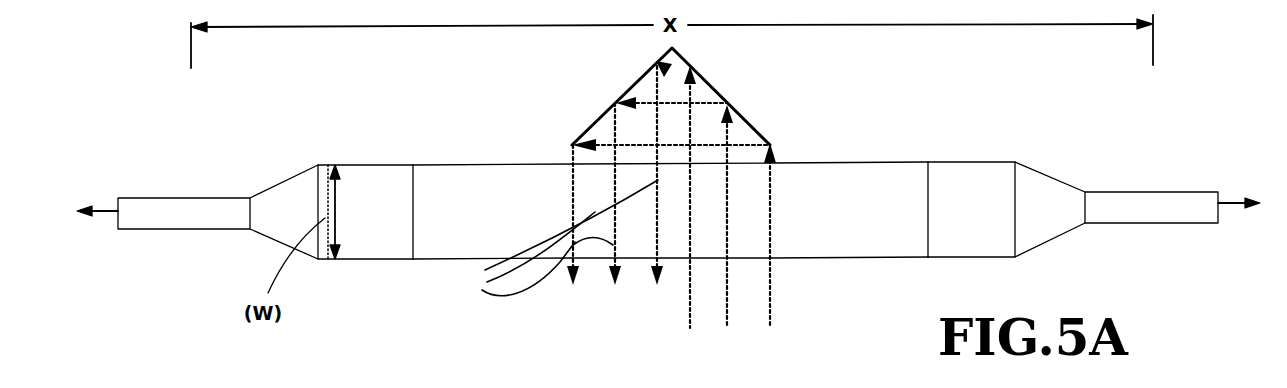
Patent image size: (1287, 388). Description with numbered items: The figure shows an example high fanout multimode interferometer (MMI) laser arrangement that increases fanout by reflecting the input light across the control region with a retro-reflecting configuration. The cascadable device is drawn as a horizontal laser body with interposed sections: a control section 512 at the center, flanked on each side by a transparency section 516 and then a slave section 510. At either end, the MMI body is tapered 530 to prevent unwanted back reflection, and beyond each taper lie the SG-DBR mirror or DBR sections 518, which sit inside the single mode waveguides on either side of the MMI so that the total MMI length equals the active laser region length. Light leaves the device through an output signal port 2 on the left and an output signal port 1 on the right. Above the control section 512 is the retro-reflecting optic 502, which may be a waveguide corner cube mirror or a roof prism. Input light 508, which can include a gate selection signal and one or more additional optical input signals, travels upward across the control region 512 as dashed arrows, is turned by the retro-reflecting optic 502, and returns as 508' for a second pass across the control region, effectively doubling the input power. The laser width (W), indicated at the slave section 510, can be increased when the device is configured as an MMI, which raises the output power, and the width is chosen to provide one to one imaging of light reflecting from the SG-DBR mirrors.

The output signal port 1 is at (1232, 195).
The output signal port 2 is at (107, 208).
The retro-reflecting optic 502 is at (723, 93).
The input light 508 is at (711, 204).
The return of input light 508' is at (543, 239).
The slave section 510 is at (368, 163).
The control section 512 is at (713, 242).
The transparency section 516 is at (487, 163).
The DBR section 518 is at (162, 197).
The tapered end 530 is at (285, 182).